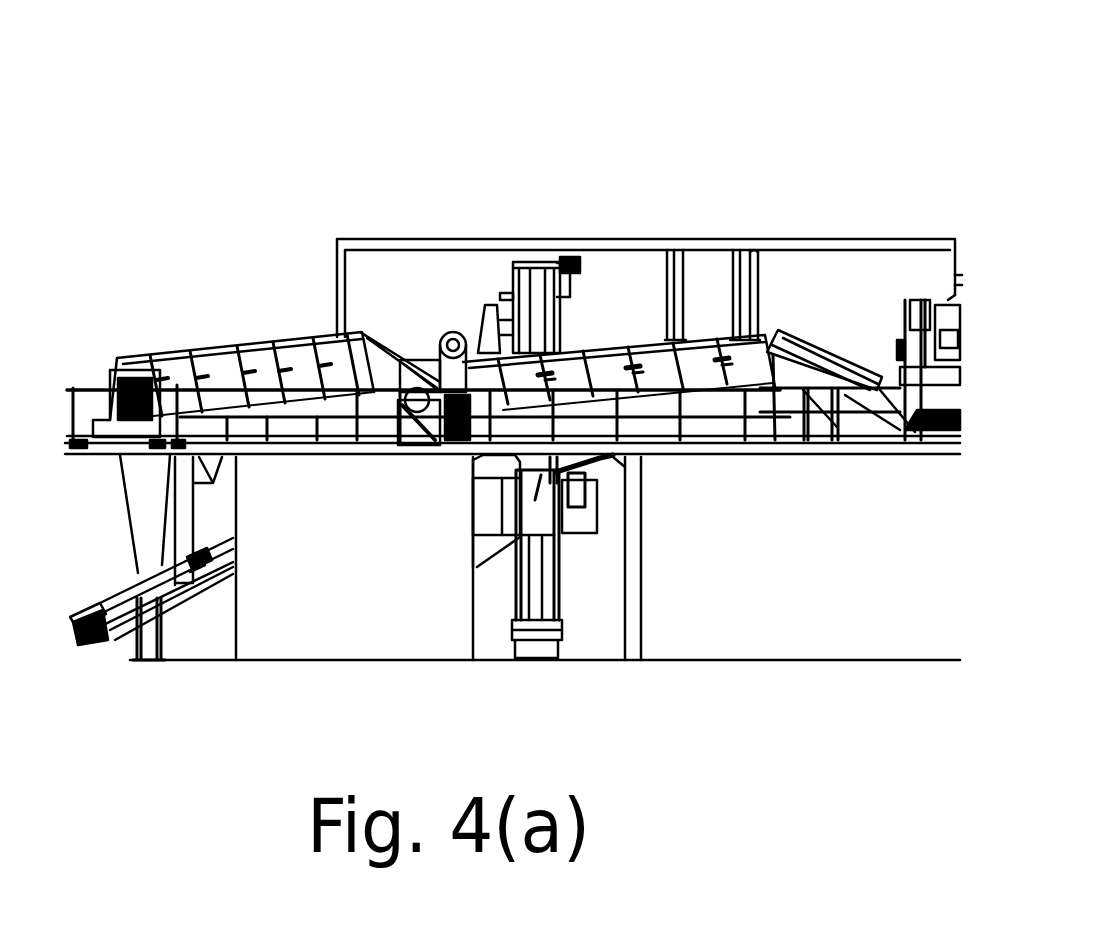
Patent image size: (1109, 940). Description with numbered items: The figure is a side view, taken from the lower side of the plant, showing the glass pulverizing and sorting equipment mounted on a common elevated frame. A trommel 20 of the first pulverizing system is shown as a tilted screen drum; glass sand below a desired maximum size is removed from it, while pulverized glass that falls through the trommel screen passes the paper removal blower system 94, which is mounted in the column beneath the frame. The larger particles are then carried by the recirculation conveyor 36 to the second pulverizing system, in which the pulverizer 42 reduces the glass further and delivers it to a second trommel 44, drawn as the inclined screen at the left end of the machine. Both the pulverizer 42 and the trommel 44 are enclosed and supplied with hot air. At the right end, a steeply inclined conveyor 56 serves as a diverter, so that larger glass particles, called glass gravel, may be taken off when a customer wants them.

The trommel 44 is at (180, 342).
The pulverizer 42 is at (440, 335).
The recirculation conveyor 36 is at (535, 265).
The paper removal blower system 94 is at (540, 495).
The trommel 20 is at (695, 330).
The conveyor 56 is at (800, 330).